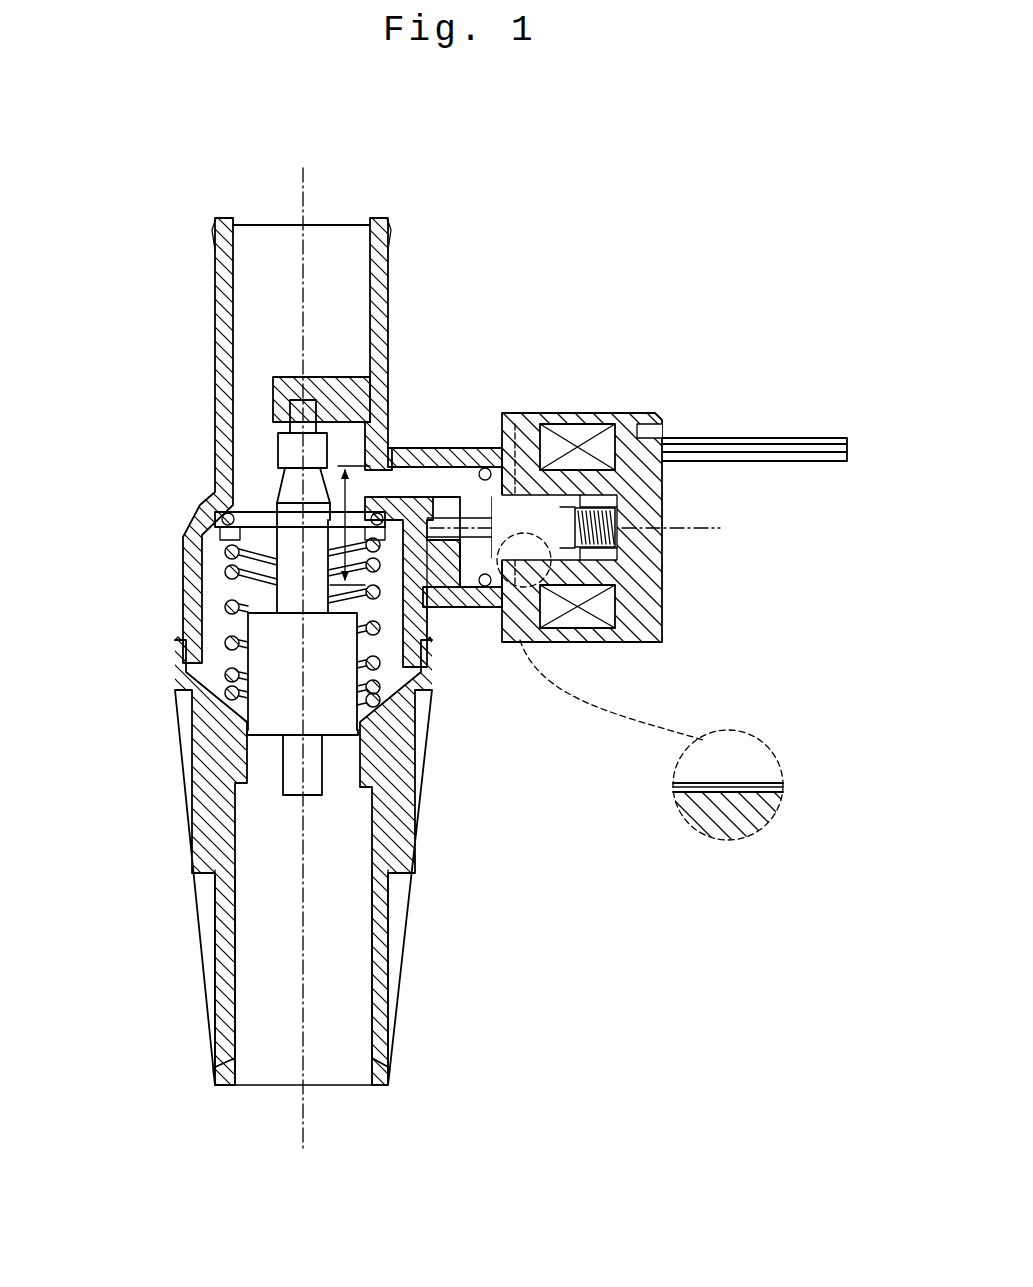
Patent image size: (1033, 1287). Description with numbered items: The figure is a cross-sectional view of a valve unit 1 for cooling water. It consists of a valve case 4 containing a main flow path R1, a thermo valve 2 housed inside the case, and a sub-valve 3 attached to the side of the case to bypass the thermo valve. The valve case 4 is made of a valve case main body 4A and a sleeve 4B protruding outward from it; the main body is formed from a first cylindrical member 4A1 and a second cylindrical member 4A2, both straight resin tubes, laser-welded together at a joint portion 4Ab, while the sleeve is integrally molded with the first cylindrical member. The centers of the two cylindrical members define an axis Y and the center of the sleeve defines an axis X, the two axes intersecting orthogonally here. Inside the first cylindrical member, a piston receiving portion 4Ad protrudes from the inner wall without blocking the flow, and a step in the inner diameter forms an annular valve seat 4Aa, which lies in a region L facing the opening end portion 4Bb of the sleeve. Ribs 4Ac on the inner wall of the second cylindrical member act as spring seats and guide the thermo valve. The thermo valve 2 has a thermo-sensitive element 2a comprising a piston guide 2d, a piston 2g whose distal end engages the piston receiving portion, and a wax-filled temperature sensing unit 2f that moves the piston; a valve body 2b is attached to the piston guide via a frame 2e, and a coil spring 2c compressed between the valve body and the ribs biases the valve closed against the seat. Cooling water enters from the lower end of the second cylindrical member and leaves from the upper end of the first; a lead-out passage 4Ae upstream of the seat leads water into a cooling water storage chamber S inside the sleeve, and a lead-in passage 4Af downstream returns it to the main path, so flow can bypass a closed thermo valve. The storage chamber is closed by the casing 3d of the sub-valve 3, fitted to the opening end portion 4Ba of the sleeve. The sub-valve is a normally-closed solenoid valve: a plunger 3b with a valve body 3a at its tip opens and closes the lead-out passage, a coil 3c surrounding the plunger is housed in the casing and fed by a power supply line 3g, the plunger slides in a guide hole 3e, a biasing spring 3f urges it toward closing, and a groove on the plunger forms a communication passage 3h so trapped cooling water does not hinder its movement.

The valve unit 1 is at (205, 200).
The thermo valve 2 is at (334, 710).
The thermo-sensitive element 2a is at (268, 723).
The valve body 2b is at (232, 520).
The spring 2c is at (225, 555).
The piston guide 2d is at (284, 450).
The frame 2e is at (243, 440).
The temperature sensing unit 2f is at (290, 859).
The piston 2g is at (305, 400).
The sub-valve 3 is at (663, 398).
The valve body 3a is at (500, 516).
The plunger 3b is at (552, 533).
The coil 3c is at (607, 600).
The casing 3d is at (612, 412).
The guide hole 3e is at (523, 490).
The biasing spring 3f is at (640, 532).
The power supply line 3g is at (760, 443).
The communication passage 3h is at (728, 790).
The valve case 4 is at (448, 220).
The valve case main body 4A is at (212, 361).
The first cylindrical member 4A1 is at (195, 530).
The second cylindrical member 4A2 is at (197, 730).
The valve seat 4Aa is at (218, 470).
The joint portion 4Ab is at (182, 660).
The ribs 4Ac is at (205, 728).
The piston receiving portion 4Ad is at (293, 378).
The lead-out passage 4Ae is at (442, 640).
The lead-in passage 4Af is at (400, 470).
The sleeve 4B is at (463, 447).
The opening end portion 4Ba is at (487, 470).
The opening end portion 4Bb is at (437, 460).
The main flow path R1 is at (345, 215).
The cooling water storage chamber S is at (437, 595).
The region L is at (335, 495).
The axis X is at (588, 529).
The axis Y is at (305, 648).